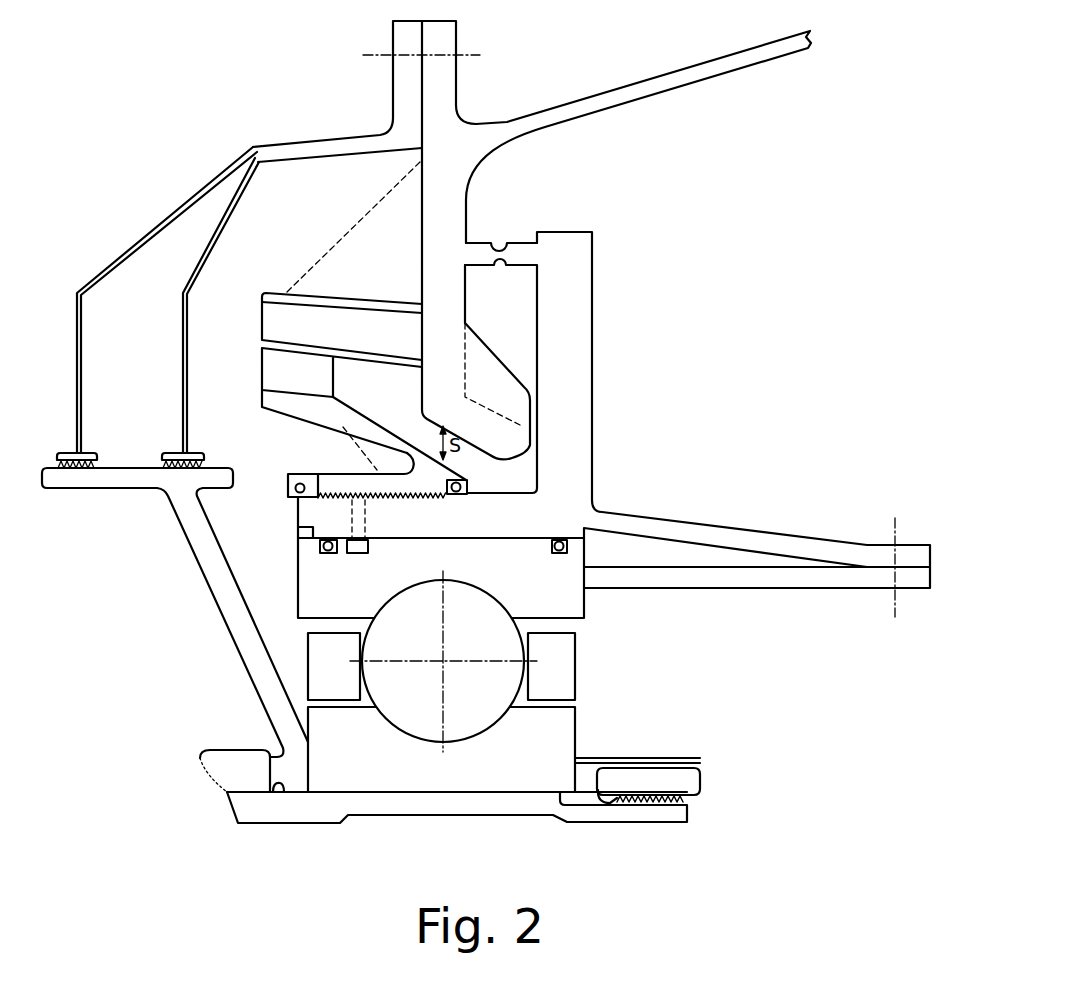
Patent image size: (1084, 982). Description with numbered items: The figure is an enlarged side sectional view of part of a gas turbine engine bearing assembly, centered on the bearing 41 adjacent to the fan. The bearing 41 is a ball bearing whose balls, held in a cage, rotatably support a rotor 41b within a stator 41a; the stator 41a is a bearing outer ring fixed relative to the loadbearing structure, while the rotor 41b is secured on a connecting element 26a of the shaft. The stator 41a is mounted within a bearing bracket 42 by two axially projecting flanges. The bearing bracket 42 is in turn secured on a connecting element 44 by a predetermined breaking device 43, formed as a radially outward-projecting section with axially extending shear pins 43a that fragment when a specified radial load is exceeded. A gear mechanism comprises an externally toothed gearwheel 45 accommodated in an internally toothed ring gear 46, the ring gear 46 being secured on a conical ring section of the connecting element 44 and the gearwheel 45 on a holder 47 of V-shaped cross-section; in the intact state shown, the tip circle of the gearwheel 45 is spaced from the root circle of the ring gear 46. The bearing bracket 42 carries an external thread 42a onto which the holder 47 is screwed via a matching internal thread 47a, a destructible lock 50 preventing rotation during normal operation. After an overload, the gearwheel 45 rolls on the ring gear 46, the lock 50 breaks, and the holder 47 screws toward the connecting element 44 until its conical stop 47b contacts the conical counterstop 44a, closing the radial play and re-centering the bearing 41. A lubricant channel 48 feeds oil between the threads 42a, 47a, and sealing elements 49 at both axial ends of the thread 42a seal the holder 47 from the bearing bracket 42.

The connecting element 26a is at (248, 808).
The bearing 41 is at (597, 676).
The stator 41a is at (575, 597).
The rotor 41b is at (548, 737).
The bearing bracket 42 is at (594, 511).
The thread 42a is at (422, 503).
The predetermined breaking device 43 is at (507, 223).
The shear pins 43a is at (520, 240).
The connecting element 44 is at (437, 228).
The counterstop 44a is at (507, 462).
The gearwheel 45 is at (282, 368).
The ring gear 46 is at (282, 320).
The holder 47 is at (303, 403).
The thread 47a is at (347, 492).
The stop 47b is at (410, 437).
The channel 48 is at (313, 537).
The sealing elements 49 is at (520, 522).
The lock 50 is at (303, 500).